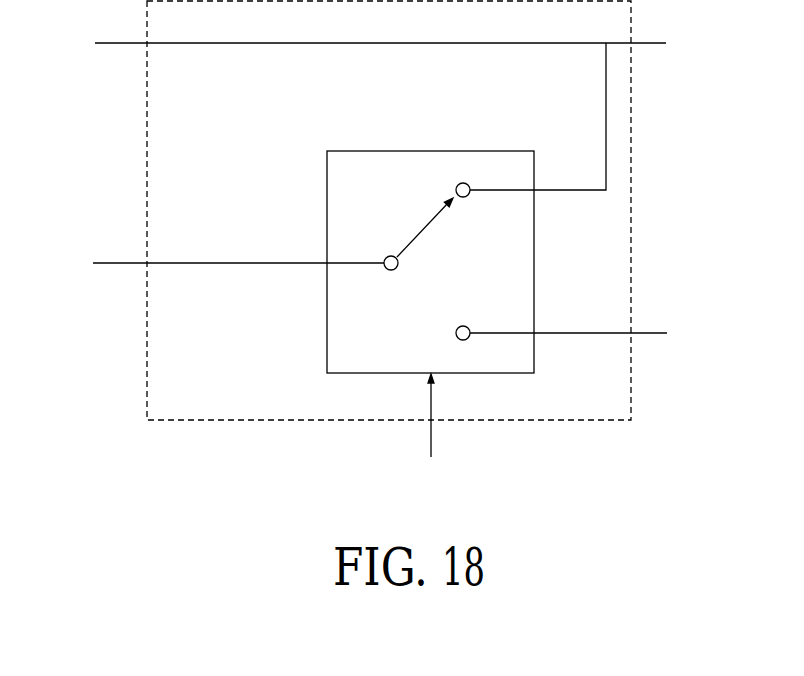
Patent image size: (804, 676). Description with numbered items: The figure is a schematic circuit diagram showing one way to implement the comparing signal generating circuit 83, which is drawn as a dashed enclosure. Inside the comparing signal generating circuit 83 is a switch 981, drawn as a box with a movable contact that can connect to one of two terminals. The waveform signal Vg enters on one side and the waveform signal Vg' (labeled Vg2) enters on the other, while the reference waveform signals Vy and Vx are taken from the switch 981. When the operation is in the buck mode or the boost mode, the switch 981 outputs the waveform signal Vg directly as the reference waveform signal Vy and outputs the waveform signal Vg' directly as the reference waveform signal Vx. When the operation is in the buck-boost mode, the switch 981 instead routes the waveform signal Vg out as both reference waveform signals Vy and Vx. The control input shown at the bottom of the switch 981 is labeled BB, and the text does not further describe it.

The comparing signal generating circuit 83 is at (621, 532).
The switch 981 is at (367, 151).
The reference waveform signal Vy is at (354, 40).
The waveform signal Vg is at (593, 105).
The reference waveform signal Vx is at (213, 260).
The waveform signal Vg' Vg2 is at (595, 330).
The control signal BB input BB is at (426, 438).